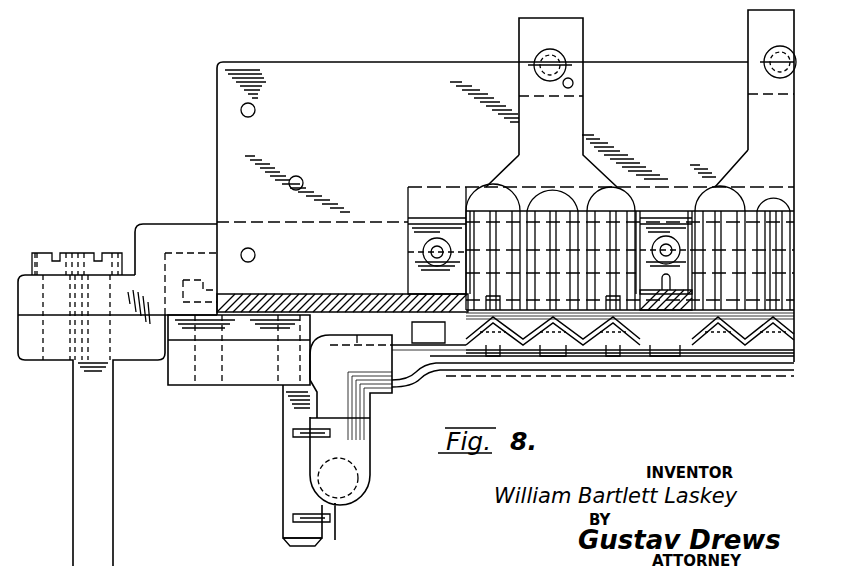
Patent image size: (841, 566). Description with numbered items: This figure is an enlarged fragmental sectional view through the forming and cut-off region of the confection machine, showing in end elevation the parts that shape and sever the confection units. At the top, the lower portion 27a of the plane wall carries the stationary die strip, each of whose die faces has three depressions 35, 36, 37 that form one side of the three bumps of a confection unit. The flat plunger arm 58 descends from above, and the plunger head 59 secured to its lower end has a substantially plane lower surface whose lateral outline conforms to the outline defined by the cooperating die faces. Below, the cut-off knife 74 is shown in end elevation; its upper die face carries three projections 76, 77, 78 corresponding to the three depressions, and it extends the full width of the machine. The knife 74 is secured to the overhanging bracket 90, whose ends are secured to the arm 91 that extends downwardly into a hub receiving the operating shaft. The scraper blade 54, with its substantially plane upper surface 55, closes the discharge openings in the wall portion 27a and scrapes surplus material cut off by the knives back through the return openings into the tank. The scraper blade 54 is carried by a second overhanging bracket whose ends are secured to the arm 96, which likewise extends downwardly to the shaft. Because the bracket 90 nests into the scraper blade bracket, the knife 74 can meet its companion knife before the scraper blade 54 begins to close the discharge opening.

The lower portion of the wall 27a is at (482, 188).
The plunger arm 58 is at (551, 102).
The plunger head 59 is at (601, 197).
The scraper blade 54 is at (696, 388).
The depression 35 is at (493, 260).
The depression 36 is at (552, 260).
The depression 37 is at (611, 260).
The upper surface of the scraper blade 55 is at (553, 350).
The projection 76 is at (493, 347).
The projection 77 is at (548, 347).
The projection 78 is at (614, 348).
The cut-off knife 74 is at (668, 347).
The overhanging bracket 90 is at (239, 350).
The arm 91 is at (337, 440).
The arm 96 is at (117, 395).